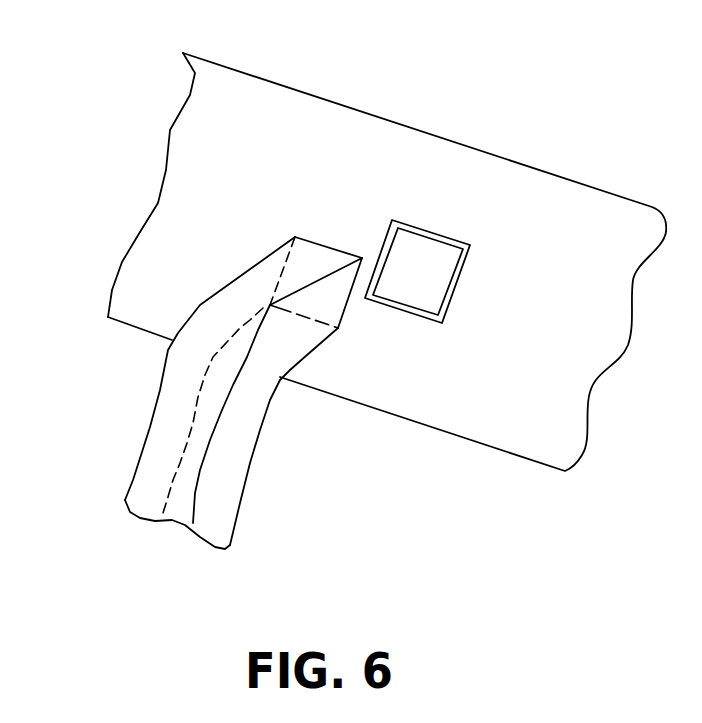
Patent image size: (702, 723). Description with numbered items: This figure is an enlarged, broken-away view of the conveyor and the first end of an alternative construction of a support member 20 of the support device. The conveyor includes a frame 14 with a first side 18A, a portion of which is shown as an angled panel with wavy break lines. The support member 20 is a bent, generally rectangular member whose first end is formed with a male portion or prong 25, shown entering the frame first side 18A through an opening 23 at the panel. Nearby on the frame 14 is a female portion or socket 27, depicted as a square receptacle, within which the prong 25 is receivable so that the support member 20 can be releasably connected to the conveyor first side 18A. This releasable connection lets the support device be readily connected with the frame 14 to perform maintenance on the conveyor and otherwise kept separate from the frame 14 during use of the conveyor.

The frame 14 is at (387, 252).
The first side 18A is at (573, 218).
The support member 20 is at (130, 423).
The opening 23 is at (307, 328).
The prong 25 is at (283, 270).
The socket 27 is at (462, 265).